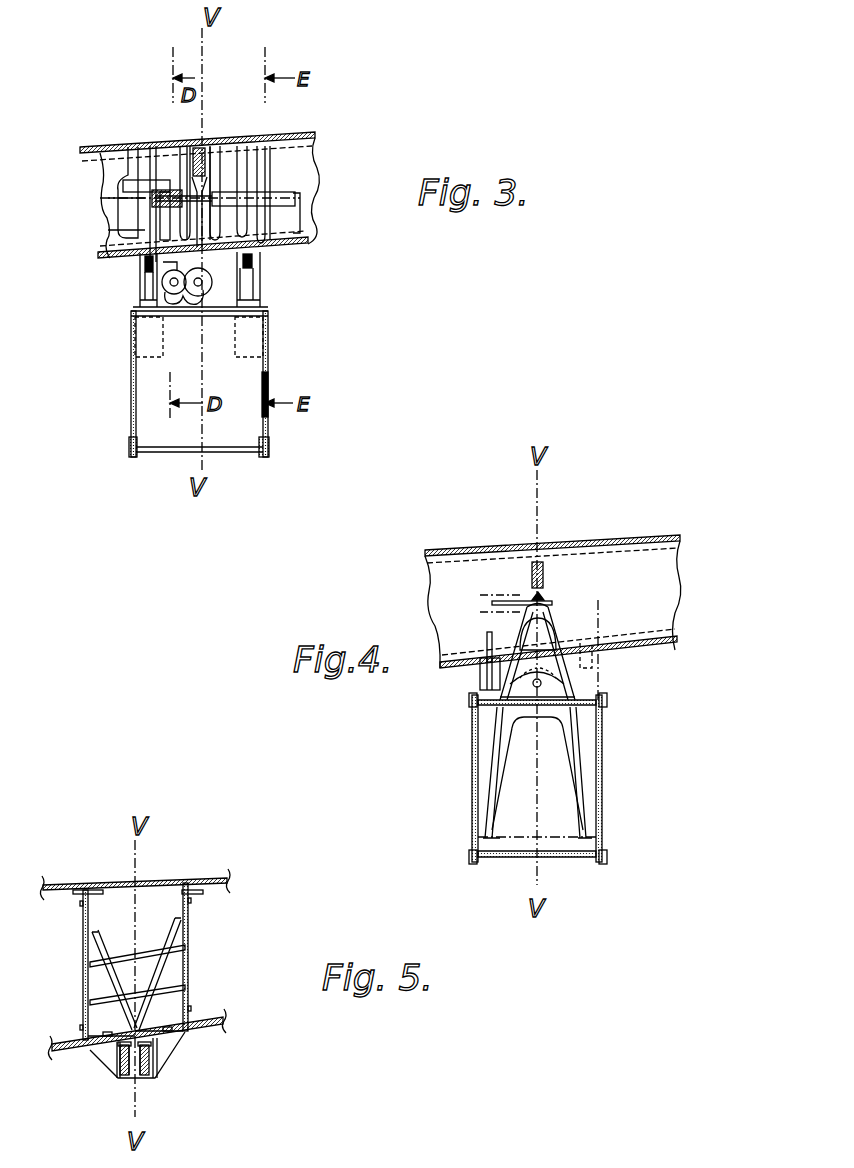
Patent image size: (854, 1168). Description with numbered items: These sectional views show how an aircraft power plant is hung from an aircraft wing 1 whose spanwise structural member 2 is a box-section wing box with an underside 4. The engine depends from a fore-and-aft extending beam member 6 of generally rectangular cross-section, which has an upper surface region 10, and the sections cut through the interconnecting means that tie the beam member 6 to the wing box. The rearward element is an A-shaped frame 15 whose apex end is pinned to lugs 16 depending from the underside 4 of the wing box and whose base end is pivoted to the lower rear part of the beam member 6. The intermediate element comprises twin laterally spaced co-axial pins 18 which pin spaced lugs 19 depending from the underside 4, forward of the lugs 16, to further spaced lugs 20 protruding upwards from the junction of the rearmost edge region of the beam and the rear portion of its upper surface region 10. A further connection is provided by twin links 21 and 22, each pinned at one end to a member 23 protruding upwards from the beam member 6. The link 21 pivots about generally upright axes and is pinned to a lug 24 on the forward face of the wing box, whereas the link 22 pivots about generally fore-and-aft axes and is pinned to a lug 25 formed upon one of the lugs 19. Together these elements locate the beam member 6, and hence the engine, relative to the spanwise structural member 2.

In FIG. 3, the aircraft wing 1 is at (306, 133).
In FIG. 4, the aircraft wing 1 is at (603, 538).
In FIG. 5, the aircraft wing 1 is at (182, 882).
In FIG. 3, the spanwise structural member 2 is at (318, 158).
In FIG. 4, the spanwise structural member 2 is at (425, 575).
In FIG. 5, the spanwise structural member 2 is at (208, 1020).
In FIG. 3, the underside 4 is at (295, 256).
In FIG. 4, the underside 4 is at (660, 648).
In FIG. 3, the beam member 6 is at (268, 372).
In FIG. 4, the beam member 6 is at (600, 845).
In FIG. 3, the upper surface region 10 is at (163, 265).
In FIG. 4, the upper surface region 10 is at (497, 693).
In FIG. 5, the A-shaped frame 15 is at (145, 1078).
In FIG. 5, the lugs 16 is at (110, 1053).
In FIG. 3, the co-axial pins 18 is at (260, 285).
In FIG. 3, the lugs 19 is at (262, 290).
In FIG. 3, the lugs 20 is at (262, 332).
In FIG. 3, the link 21 is at (207, 178).
In FIG. 4, the link 21 is at (553, 600).
In FIG. 3, the link 22 is at (205, 312).
In FIG. 4, the member 23 is at (558, 633).
In FIG. 3, the lug 24 is at (158, 150).
In FIG. 4, the lug 24 is at (500, 601).
In FIG. 3, the lug 25 is at (167, 288).